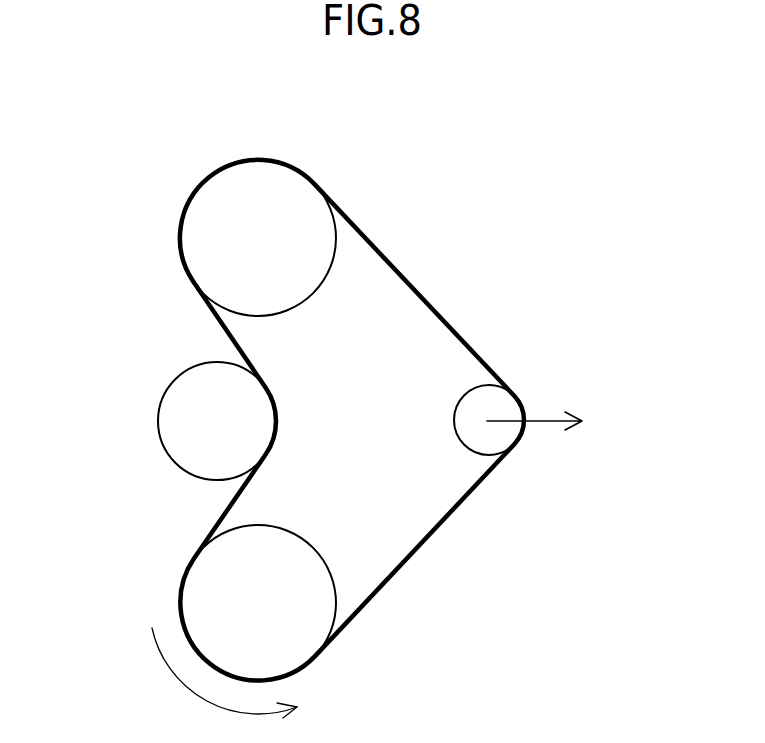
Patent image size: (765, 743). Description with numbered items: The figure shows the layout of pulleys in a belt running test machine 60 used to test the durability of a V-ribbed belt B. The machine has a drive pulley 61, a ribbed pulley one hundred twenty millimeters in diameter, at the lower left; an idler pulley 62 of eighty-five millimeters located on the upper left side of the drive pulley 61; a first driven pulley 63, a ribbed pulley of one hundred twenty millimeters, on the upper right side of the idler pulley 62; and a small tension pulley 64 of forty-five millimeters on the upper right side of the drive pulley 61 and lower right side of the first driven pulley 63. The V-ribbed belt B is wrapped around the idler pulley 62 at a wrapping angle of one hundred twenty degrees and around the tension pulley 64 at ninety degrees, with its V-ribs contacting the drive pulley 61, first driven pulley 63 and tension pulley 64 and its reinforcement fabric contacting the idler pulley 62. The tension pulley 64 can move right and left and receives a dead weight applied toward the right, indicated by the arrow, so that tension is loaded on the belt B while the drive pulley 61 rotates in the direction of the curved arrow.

The belt running test machine 60 is at (529, 167).
The drive pulley 61 is at (205, 583).
The idler pulley 62 is at (177, 401).
The first driven pulley 63 is at (208, 201).
The tension pulley 64 is at (485, 400).
The V-ribbed belt B is at (427, 540).